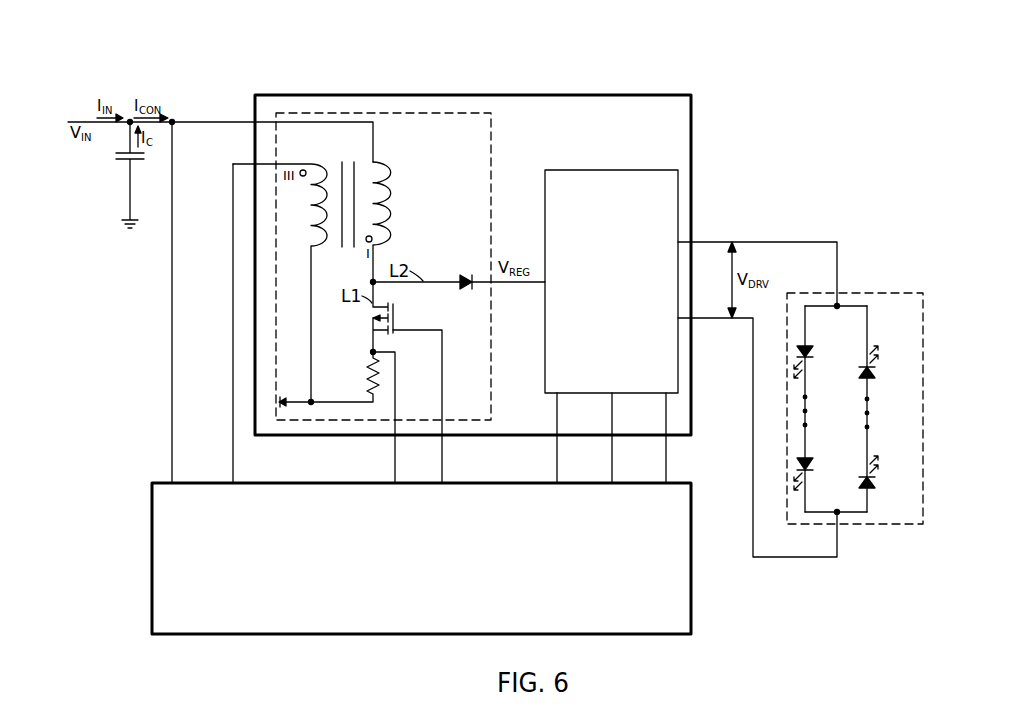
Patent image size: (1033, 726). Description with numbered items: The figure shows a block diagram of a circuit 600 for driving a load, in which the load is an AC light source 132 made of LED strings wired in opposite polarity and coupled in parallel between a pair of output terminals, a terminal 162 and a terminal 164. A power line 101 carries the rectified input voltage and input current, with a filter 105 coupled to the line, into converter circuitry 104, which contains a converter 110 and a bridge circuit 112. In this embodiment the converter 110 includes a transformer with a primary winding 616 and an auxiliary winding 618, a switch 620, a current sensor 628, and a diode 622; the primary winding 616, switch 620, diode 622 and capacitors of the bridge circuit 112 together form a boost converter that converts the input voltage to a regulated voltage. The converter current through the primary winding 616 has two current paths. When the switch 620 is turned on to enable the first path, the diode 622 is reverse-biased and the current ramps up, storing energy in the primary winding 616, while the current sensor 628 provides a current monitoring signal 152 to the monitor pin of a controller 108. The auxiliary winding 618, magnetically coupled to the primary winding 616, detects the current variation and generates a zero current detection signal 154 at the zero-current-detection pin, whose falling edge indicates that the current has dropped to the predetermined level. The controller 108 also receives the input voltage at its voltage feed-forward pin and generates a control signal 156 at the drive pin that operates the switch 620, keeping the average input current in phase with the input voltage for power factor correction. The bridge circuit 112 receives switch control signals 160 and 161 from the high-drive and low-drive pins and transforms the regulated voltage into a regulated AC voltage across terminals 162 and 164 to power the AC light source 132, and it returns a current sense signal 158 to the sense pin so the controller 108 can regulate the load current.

The circuit for driving a load 600 is at (156, 88).
The power line 101 is at (83, 121).
The filter 105 is at (123, 161).
The converter circuitry 104 is at (600, 95).
The converter 110 is at (491, 140).
The primary winding 616 is at (381, 165).
The auxiliary winding 618 is at (315, 251).
The switch 620 is at (393, 318).
The diode 622 is at (463, 273).
The current sensor 628 is at (367, 378).
The bridge circuit 112 is at (598, 315).
The controller 108 is at (406, 580).
The current monitoring signal 152 is at (394, 476).
The zero current detection signal 154 is at (233, 476).
The control signal 156 is at (442, 476).
The current sense signal 158 is at (557, 476).
The switch control signal 160 is at (612, 476).
The switch control signal 161 is at (666, 476).
The terminal 162 is at (837, 259).
The terminal 164 is at (837, 556).
The AC light source 132 is at (868, 294).